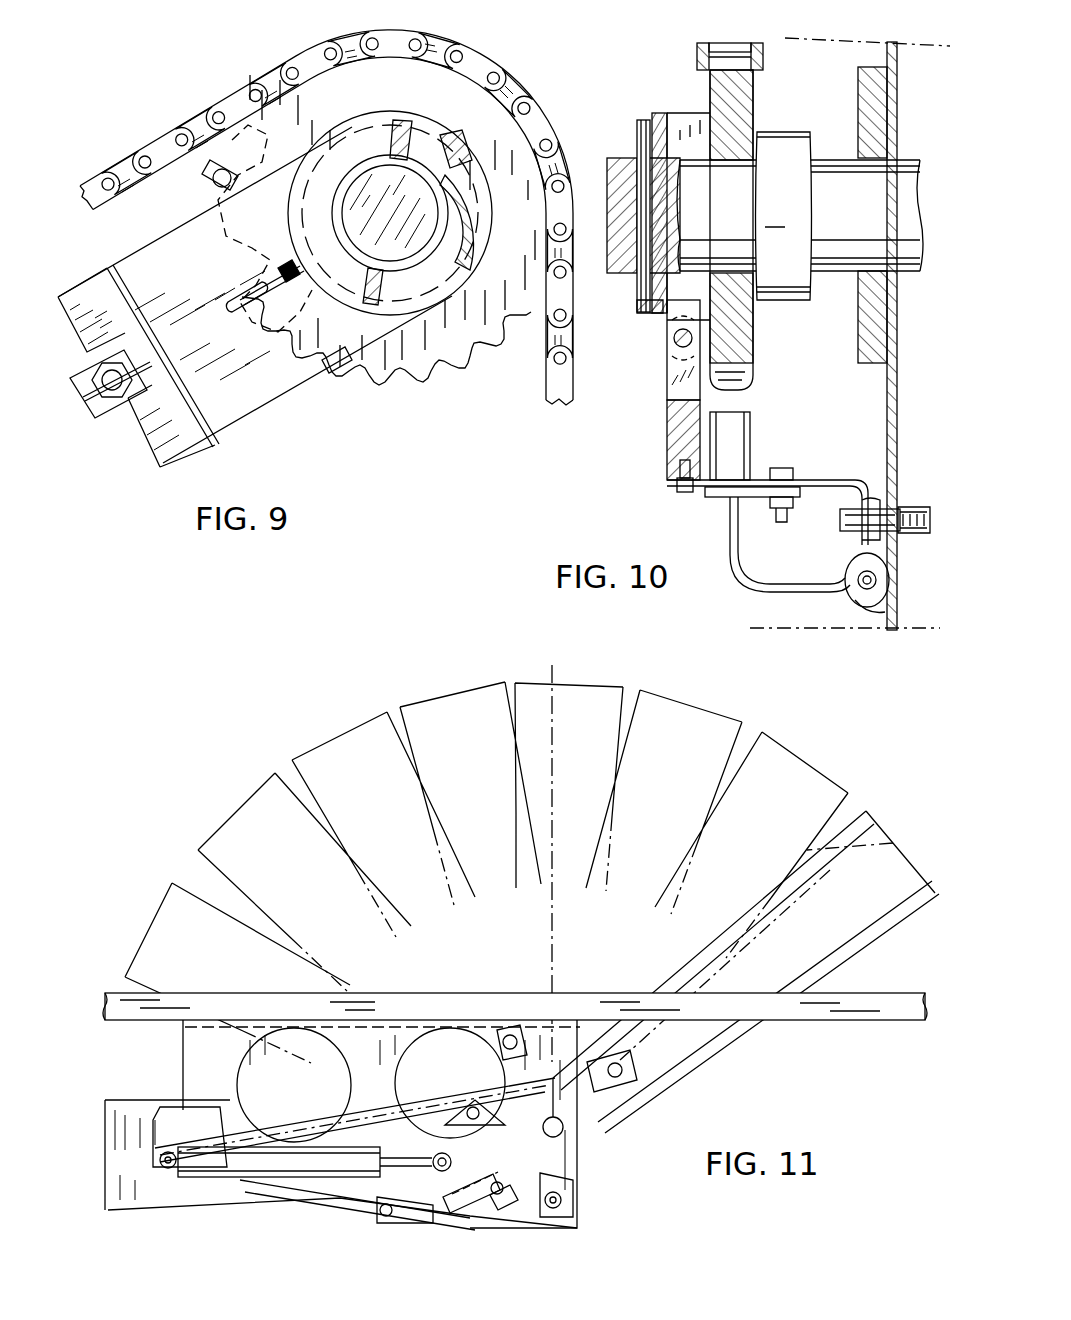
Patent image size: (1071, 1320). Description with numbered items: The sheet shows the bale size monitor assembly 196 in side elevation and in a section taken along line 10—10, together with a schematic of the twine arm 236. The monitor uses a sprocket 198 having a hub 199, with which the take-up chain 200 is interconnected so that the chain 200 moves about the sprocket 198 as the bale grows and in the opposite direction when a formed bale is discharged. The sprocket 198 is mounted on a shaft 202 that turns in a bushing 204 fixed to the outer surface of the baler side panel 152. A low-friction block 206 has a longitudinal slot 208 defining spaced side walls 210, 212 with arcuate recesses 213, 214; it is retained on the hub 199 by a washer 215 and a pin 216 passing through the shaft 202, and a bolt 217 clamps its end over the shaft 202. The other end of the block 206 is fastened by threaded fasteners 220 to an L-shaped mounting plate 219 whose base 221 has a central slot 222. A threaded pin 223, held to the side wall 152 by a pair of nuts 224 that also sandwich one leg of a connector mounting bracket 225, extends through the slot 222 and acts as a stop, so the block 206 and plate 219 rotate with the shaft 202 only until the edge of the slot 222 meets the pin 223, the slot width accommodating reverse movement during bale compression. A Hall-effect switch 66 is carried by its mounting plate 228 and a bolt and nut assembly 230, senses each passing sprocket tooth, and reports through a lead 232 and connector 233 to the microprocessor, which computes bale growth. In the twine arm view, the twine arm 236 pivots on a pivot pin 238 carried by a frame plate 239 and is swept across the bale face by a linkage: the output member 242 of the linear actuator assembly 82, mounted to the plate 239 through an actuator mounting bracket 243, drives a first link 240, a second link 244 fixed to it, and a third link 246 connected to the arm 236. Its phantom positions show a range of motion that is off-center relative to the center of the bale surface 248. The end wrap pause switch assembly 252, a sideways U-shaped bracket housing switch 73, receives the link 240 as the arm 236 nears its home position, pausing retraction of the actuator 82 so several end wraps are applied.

In FIG. 9, the section line 10 is at (593, 126).
In FIG. 10, the switch 66 is at (750, 442).
In FIG. 11, the end wrap pause switch 73 is at (500, 1216).
In FIG. 11, the twine arm linear actuator assembly 82 is at (276, 1114).
In FIG. 10, the baler internal side panel 152 is at (898, 347).
In FIG. 9, the bale size monitor assembly 196 is at (395, 440).
In FIG. 9, the sprocket 198 is at (488, 382).
In FIG. 10, the sprocket 198 is at (704, 80).
In FIG. 10, the hub 199 is at (705, 120).
In FIG. 9, the take-up chain 200 is at (573, 400).
In FIG. 10, the take-up chain 200 is at (762, 44).
In FIG. 10, the shaft 202 is at (838, 158).
In FIG. 10, the bushing 204 is at (855, 344).
In FIG. 9, the block 206 is at (254, 402).
In FIG. 10, the block 206 is at (665, 455).
In FIG. 9, the longitudinal slot 208 is at (245, 300).
In FIG. 9, the side wall 210 is at (262, 325).
In FIG. 9, the side wall 212 is at (267, 293).
In FIG. 10, the side wall 212 is at (667, 375).
In FIG. 9, the arcuate recess 213 is at (472, 213).
In FIG. 9, the arcuate recess 214 is at (460, 163).
In FIG. 10, the washer 215 is at (662, 320).
In FIG. 9, the pin 216 is at (404, 122).
In FIG. 10, the pin 216 is at (643, 308).
In FIG. 9, the bolt 217 is at (346, 380).
In FIG. 9, the mounting plate 219 is at (202, 442).
In FIG. 10, the mounting plate 219 is at (832, 470).
In FIG. 9, the threaded fasteners 220 is at (204, 184).
In FIG. 10, the threaded fasteners 220 is at (688, 493).
In FIG. 9, the base 221 is at (170, 460).
In FIG. 10, the base 221 is at (872, 488).
In FIG. 9, the central slot 222 is at (124, 407).
In FIG. 10, the pin 223 is at (855, 532).
In FIG. 10, the nuts 224 is at (900, 508).
In FIG. 9, the connector mounting bracket 225 is at (76, 332).
In FIG. 10, the connector mounting bracket 225 is at (890, 620).
In FIG. 10, the mounting plate 228 is at (760, 498).
In FIG. 10, the bolt and nut assembly 230 is at (798, 498).
In FIG. 10, the lead 232 is at (760, 593).
In FIG. 10, the connector 233 is at (885, 560).
In FIG. 11, the twine arm 236 is at (155, 1208).
In FIG. 11, the pivot pin 238 is at (578, 1131).
In FIG. 11, the plate 239 is at (566, 1227).
In FIG. 11, the first link 240 is at (580, 1175).
In FIG. 11, the output member 242 is at (488, 1090).
In FIG. 11, the actuator mounting bracket 243 is at (178, 1122).
In FIG. 11, the second link 244 is at (415, 1227).
In FIG. 11, the third link 246 is at (372, 1210).
In FIG. 11, the center of the surface of the formed bale 248 is at (553, 874).
In FIG. 11, the twine arm end wrap pause switch assembly 252 is at (471, 1226).